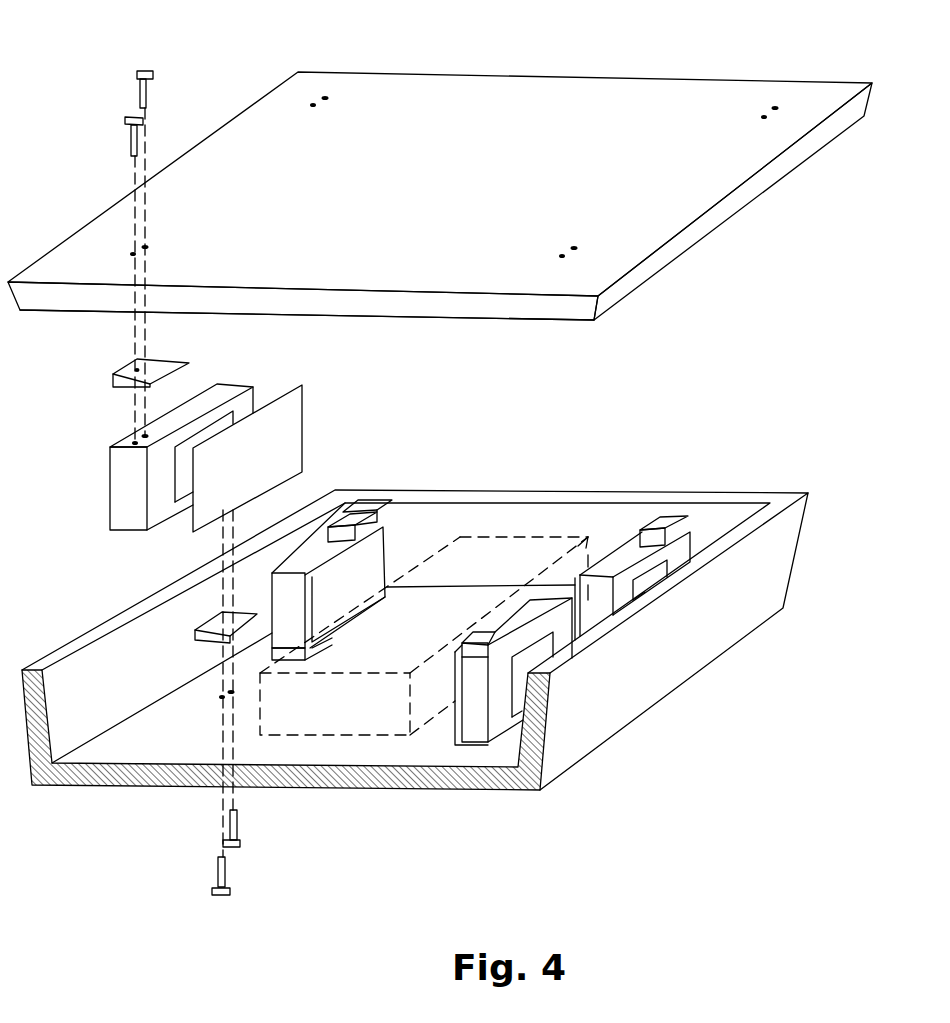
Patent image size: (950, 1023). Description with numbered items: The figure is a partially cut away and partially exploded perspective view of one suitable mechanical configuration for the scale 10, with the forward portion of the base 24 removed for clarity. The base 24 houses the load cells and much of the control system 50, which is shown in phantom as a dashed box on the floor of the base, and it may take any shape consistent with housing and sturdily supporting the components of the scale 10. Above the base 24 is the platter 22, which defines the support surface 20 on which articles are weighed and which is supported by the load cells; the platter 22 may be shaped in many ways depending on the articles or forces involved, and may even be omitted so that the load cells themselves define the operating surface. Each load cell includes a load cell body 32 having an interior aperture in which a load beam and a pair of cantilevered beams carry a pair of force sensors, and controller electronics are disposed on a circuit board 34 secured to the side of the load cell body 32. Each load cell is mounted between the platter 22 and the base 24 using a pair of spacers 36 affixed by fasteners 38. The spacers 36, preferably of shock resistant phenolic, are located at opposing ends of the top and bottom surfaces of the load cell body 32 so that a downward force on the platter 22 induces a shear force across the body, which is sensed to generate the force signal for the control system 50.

The scale 10 is at (645, 827).
The support surface 20 is at (628, 60).
The platter 22 is at (390, 318).
The base 24 is at (668, 697).
The load cell body 32 is at (108, 472).
The circuit board 34 is at (305, 440).
The spacer 36 is at (115, 373).
The fastener 38 is at (128, 128).
The control system 50 is at (350, 716).